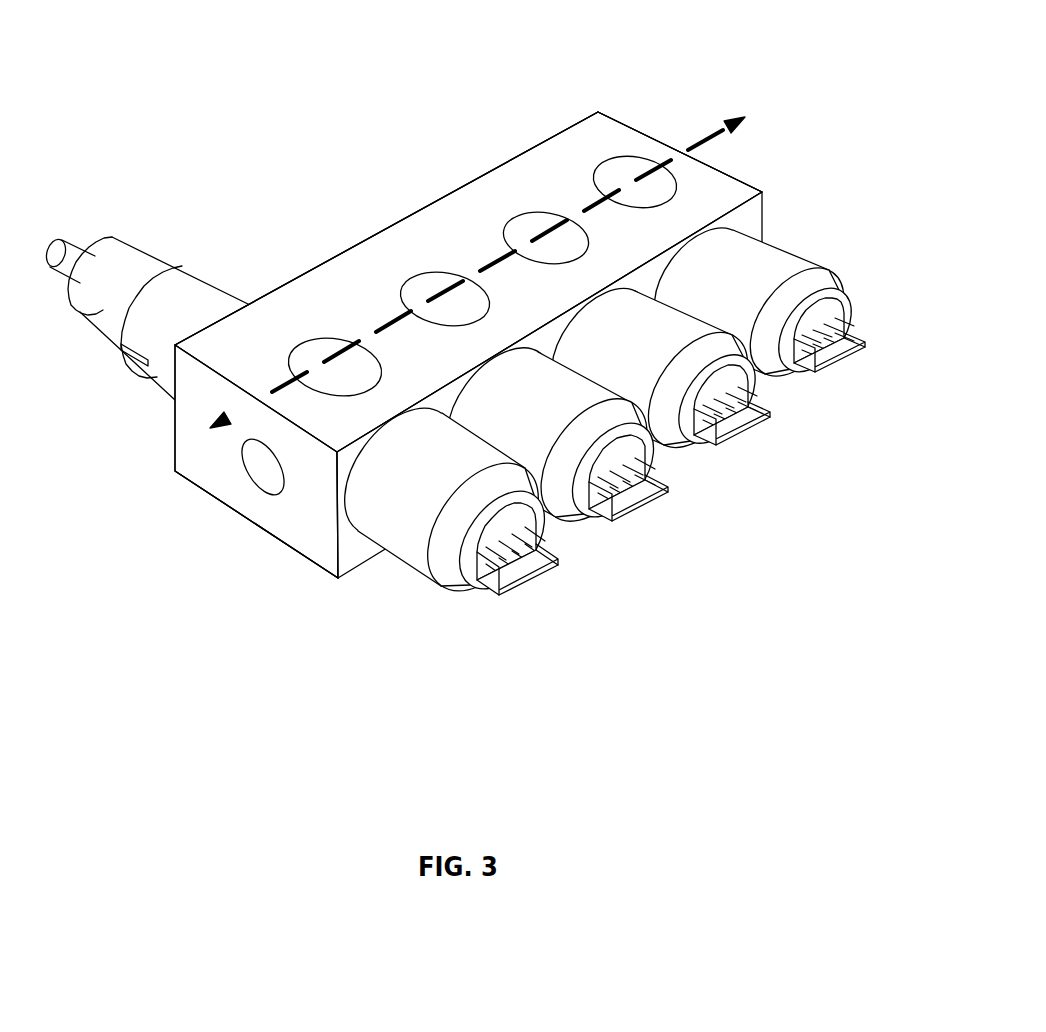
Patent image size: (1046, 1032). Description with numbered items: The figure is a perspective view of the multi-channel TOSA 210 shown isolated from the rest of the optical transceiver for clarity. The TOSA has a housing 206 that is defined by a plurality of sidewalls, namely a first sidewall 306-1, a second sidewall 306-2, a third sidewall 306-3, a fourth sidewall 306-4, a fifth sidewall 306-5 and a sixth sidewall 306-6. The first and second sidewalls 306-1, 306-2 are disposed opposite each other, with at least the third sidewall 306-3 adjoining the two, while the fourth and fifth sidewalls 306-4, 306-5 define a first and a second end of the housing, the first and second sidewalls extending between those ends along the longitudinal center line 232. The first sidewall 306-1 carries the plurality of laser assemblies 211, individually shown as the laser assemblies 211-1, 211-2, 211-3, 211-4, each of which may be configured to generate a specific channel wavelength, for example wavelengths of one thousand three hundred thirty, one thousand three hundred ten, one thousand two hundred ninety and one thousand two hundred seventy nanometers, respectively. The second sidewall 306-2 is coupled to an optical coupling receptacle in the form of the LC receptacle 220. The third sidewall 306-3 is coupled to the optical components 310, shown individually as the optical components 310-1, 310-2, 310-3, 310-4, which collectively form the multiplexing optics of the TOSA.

The multi-channel TOSA 210 is at (424, 344).
The housing 206 is at (257, 348).
The LC receptacle 220 is at (113, 258).
The longitudinal center line 232 is at (737, 117).
The optical components 310 is at (458, 219).
The optical component 310-1 is at (635, 173).
The optical component 310-2 is at (512, 237).
The optical component 310-3 is at (412, 297).
The optical component 310-4 is at (313, 323).
The first sidewall 306-1 is at (754, 210).
The second sidewall 306-2 is at (224, 307).
The third sidewall 306-3 is at (468, 282).
The fourth sidewall 306-4 is at (190, 452).
The fifth sidewall 306-5 is at (668, 133).
The sixth sidewall 306-6 is at (293, 555).
The laser assemblies 211 is at (601, 425).
The laser assembly 211-1 is at (750, 302).
The laser assembly 211-2 is at (650, 367).
The laser assembly 211-3 is at (547, 434).
The laser assembly 211-4 is at (442, 499).